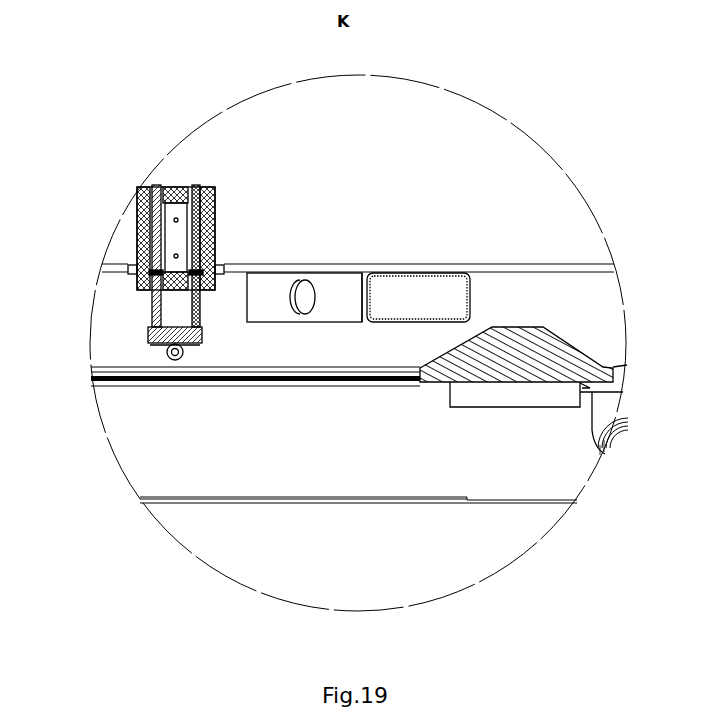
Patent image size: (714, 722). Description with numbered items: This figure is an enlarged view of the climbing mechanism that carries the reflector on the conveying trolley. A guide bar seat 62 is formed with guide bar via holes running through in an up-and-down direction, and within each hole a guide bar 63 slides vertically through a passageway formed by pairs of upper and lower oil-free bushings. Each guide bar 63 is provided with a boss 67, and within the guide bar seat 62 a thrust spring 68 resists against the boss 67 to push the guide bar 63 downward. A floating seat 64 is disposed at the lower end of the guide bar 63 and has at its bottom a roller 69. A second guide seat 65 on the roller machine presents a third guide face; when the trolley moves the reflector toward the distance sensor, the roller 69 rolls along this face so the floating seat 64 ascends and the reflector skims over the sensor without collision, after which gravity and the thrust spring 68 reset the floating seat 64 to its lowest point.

The guide bar seat 62 is at (213, 228).
The guide bar 63 is at (153, 188).
The floating seat 64 is at (152, 343).
The second guide seat 65 is at (530, 358).
The boss 67 is at (142, 265).
The thrust spring 68 is at (150, 217).
The roller 69 is at (180, 358).